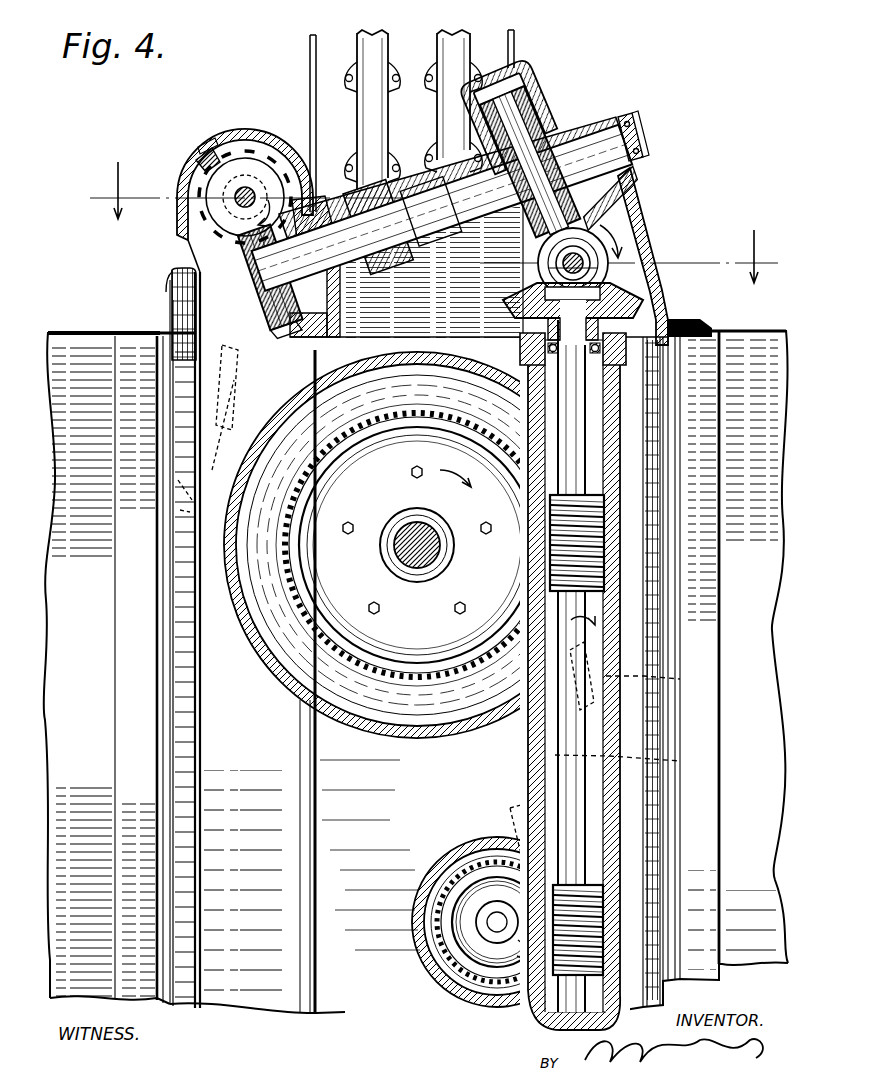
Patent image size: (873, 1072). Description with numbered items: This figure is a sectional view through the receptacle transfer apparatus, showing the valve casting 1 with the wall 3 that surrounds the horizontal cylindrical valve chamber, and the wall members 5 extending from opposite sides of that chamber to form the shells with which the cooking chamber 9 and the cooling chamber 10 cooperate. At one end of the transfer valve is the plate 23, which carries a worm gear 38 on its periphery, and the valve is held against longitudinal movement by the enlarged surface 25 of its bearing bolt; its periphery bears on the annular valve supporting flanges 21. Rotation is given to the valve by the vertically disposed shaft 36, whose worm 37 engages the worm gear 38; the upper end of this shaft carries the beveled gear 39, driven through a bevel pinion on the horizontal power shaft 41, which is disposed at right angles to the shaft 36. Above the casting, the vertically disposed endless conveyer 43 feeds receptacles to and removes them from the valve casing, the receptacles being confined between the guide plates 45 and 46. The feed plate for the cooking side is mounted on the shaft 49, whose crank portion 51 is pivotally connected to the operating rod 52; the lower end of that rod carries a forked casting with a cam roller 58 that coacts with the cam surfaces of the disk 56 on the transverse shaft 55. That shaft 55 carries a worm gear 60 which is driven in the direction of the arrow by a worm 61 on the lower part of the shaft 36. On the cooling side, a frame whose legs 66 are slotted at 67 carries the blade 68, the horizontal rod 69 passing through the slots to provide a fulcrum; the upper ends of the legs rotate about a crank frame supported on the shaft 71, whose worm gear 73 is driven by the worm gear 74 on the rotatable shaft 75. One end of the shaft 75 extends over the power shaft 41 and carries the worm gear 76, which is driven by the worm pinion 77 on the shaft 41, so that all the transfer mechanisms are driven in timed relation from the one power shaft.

The valve casting 1 is at (270, 962).
The wall 3 is at (310, 392).
The wall members 5 is at (434, 478).
The cooking chamber 9 is at (790, 404).
The cooling chamber 10 is at (54, 364).
The annular valve supporting flanges 21 is at (407, 346).
The plate 23 is at (358, 568).
The enlarged surface 25 is at (414, 560).
The shaft 36 is at (570, 440).
The worm 37 is at (552, 564).
The worm gear 38 is at (312, 458).
The beveled gear 39 is at (628, 290).
The power shaft 41 is at (582, 254).
The endless conveyer 43 is at (440, 116).
The guide plate 45 is at (516, 48).
The guide plate 46 is at (308, 102).
The shaft 49 is at (566, 654).
The crank portion 51 is at (655, 679).
The operating rod 52 is at (629, 761).
The shaft 55 is at (492, 924).
The disk 56 is at (478, 842).
The cam roller 58 is at (510, 806).
The worm gear 60 is at (470, 1000).
The worm 61 is at (604, 904).
The legs 66 is at (165, 360).
The slot 67 is at (243, 393).
The blade 68 is at (180, 500).
The rod 69 is at (193, 314).
The shaft 71 is at (236, 190).
The worm gear 73 is at (210, 218).
The worm gear 74 is at (236, 288).
The rotatable shaft 75 is at (474, 206).
The worm gear 76 is at (540, 122).
The worm pinion 77 is at (560, 266).